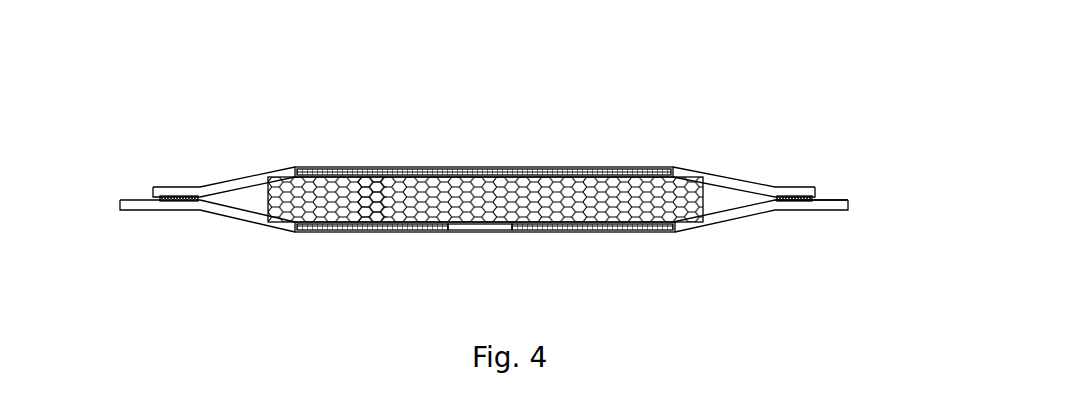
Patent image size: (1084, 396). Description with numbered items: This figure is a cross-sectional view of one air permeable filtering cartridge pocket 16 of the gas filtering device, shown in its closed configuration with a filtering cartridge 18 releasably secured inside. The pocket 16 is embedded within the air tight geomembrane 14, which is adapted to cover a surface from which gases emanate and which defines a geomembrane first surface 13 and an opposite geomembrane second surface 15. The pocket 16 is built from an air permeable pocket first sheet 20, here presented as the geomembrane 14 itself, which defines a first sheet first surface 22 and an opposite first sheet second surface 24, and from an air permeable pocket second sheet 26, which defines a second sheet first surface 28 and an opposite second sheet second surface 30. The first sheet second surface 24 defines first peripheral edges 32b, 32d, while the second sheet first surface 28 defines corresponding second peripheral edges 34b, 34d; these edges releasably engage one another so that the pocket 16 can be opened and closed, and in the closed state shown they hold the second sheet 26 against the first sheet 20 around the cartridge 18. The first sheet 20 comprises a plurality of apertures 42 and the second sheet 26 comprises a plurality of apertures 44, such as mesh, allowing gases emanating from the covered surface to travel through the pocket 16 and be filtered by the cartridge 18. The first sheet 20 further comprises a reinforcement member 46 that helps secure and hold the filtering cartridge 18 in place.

The geomembrane first surface 13 is at (827, 209).
The air tight geomembrane 14 is at (233, 210).
The geomembrane second surface 15 is at (827, 201).
The air permeable filtering cartridge pocket 16 is at (596, 116).
The filtering cartridge 18 is at (590, 200).
The air permeable pocket first sheet 20 is at (284, 231).
The first sheet first surface 22 is at (412, 232).
The first sheet second surface 24 is at (372, 220).
The air permeable pocket second sheet 26 is at (237, 183).
The second sheet first surface 28 is at (660, 176).
The second sheet second surface 30 is at (636, 167).
The first peripheral edge 32b is at (792, 197).
The second peripheral edge 34b is at (792, 197).
The first peripheral edge 32d is at (177, 196).
The second peripheral edge 34d is at (177, 196).
The apertures 42 is at (553, 229).
The apertures 44 is at (432, 176).
The reinforcement member 46 is at (478, 232).